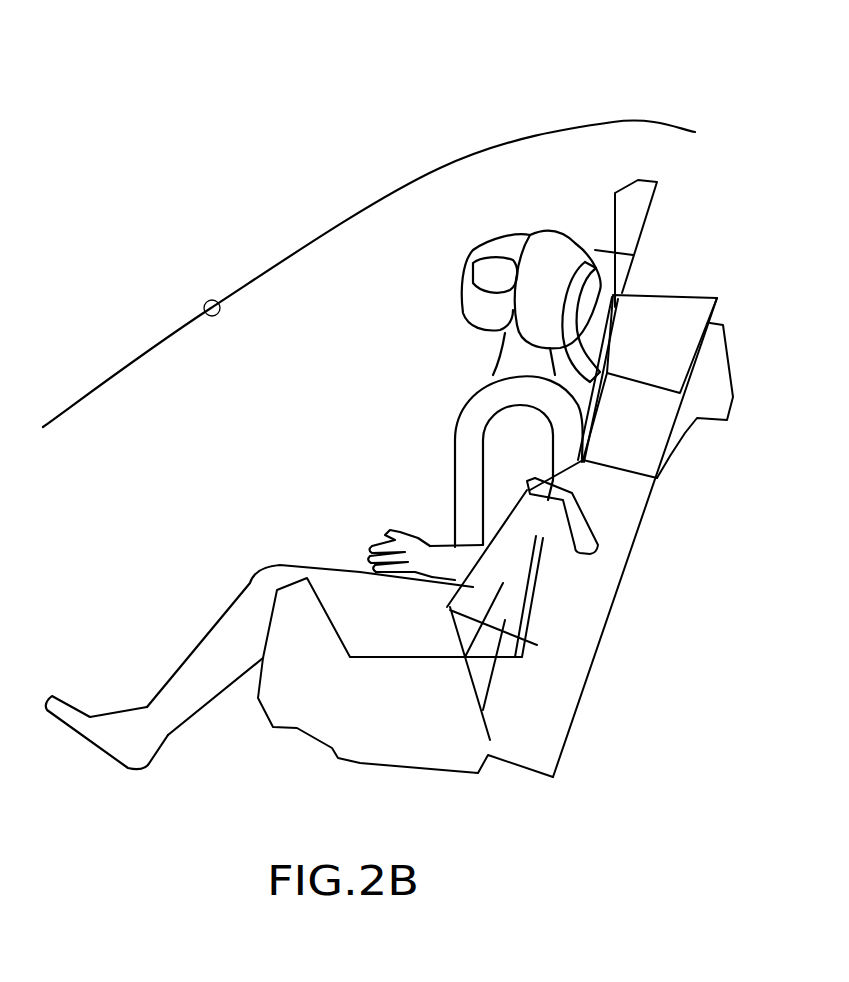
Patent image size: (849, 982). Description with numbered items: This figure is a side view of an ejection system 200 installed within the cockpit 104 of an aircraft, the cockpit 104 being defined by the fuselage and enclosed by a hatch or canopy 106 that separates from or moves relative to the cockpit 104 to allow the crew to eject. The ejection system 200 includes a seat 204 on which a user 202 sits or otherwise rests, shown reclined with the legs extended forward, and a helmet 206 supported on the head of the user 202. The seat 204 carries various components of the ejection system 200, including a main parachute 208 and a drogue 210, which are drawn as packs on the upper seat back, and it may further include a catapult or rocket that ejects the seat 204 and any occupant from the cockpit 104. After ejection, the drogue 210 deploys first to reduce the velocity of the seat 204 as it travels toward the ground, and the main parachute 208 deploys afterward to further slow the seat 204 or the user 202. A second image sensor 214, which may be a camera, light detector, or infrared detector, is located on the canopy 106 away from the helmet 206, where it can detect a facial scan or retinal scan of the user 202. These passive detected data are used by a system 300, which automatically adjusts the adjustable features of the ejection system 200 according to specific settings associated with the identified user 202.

The cockpit 104 is at (404, 238).
The canopy 106 is at (650, 122).
The ejection system 200 is at (526, 478).
The user 202 is at (323, 457).
The seat 204 is at (603, 630).
The helmet 206 is at (553, 247).
The main parachute 208 is at (693, 330).
The drogue 210 is at (717, 390).
The second image sensor 214 is at (212, 316).
The system 300 is at (718, 705).